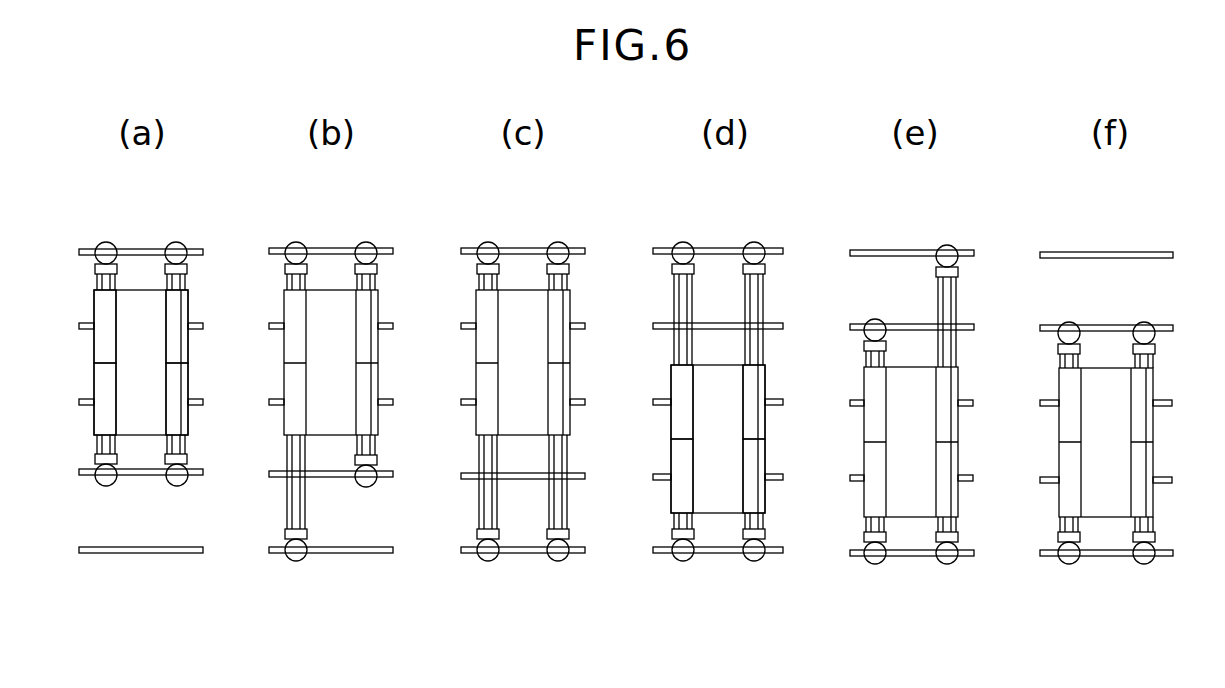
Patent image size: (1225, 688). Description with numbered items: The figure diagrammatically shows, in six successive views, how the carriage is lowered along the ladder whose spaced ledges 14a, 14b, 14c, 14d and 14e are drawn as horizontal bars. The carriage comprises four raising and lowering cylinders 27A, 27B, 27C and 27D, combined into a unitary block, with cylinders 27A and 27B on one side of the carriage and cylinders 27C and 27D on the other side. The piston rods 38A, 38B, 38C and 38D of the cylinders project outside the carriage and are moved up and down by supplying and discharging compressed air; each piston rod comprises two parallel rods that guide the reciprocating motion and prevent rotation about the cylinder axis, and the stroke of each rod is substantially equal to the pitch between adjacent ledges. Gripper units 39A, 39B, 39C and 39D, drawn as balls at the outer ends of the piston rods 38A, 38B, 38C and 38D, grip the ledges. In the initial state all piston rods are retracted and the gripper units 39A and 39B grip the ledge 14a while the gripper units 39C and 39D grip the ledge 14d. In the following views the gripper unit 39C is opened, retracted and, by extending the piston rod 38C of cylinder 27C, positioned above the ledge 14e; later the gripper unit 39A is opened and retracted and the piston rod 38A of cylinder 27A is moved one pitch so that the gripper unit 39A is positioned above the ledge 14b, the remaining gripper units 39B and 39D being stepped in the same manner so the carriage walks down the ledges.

In FIG. 6a, the ledge 14a is at (83, 249).
In FIG. 6f, the ledge 14a is at (1155, 252).
In FIG. 6a, the ledge 14b is at (87, 330).
In FIG. 6f, the ledge 14b is at (1163, 326).
In FIG. 6a, the ledge 14c is at (88, 398).
In FIG. 6f, the ledge 14c is at (1165, 406).
In FIG. 6a, the ledge 14d is at (87, 478).
In FIG. 6f, the ledge 14d is at (1162, 476).
In FIG. 6a, the ledge 14e is at (105, 554).
In FIG. 6f, the ledge 14e is at (1165, 555).
In FIG. 6a, the raising and lowering cylinder 27A is at (97, 305).
In FIG. 6d, the raising and lowering cylinder 27A is at (673, 378).
In FIG. 6a, the raising and lowering cylinder 27B is at (184, 301).
In FIG. 6d, the raising and lowering cylinder 27B is at (764, 378).
In FIG. 6a, the raising and lowering cylinder 27C is at (97, 418).
In FIG. 6d, the raising and lowering cylinder 27C is at (673, 460).
In FIG. 6a, the raising and lowering cylinder 27D is at (182, 388).
In FIG. 6d, the raising and lowering cylinder 27D is at (752, 460).
In FIG. 6a, the piston rod 38A is at (96, 281).
In FIG. 6b, the piston rod 38A is at (286, 266).
In FIG. 6c, the piston rod 38A is at (479, 266).
In FIG. 6d, the piston rod 38A is at (673, 268).
In FIG. 6e, the piston rod 38A is at (884, 353).
In FIG. 6f, the piston rod 38A is at (1058, 356).
In FIG. 6a, the piston rod 38B is at (168, 277).
In FIG. 6b, the piston rod 38B is at (376, 268).
In FIG. 6c, the piston rod 38B is at (569, 268).
In FIG. 6d, the piston rod 38B is at (764, 270).
In FIG. 6e, the piston rod 38B is at (939, 295).
In FIG. 6f, the piston rod 38B is at (1155, 355).
In FIG. 6a, the piston rod 38C is at (96, 450).
In FIG. 6b, the piston rod 38C is at (290, 520).
In FIG. 6c, the piston rod 38C is at (496, 455).
In FIG. 6d, the piston rod 38C is at (675, 523).
In FIG. 6e, the piston rod 38C is at (866, 527).
In FIG. 6f, the piston rod 38C is at (1060, 528).
In FIG. 6a, the piston rod 38D is at (168, 447).
In FIG. 6b, the piston rod 38D is at (358, 447).
In FIG. 6c, the piston rod 38D is at (549, 508).
In FIG. 6d, the piston rod 38D is at (745, 523).
In FIG. 6e, the piston rod 38D is at (956, 527).
In FIG. 6f, the piston rod 38D is at (1156, 528).
In FIG. 6a, the gripper unit 39A is at (106, 242).
In FIG. 6b, the gripper unit 39A is at (298, 243).
In FIG. 6c, the gripper unit 39A is at (490, 243).
In FIG. 6d, the gripper unit 39A is at (688, 243).
In FIG. 6e, the gripper unit 39A is at (874, 320).
In FIG. 6f, the gripper unit 39A is at (1069, 322).
In FIG. 6a, the gripper unit 39B is at (176, 242).
In FIG. 6b, the gripper unit 39B is at (362, 243).
In FIG. 6c, the gripper unit 39B is at (555, 243).
In FIG. 6d, the gripper unit 39B is at (750, 243).
In FIG. 6e, the gripper unit 39B is at (947, 245).
In FIG. 6f, the gripper unit 39B is at (1144, 322).
In FIG. 6a, the gripper unit 39C is at (106, 487).
In FIG. 6b, the gripper unit 39C is at (300, 556).
In FIG. 6c, the gripper unit 39C is at (488, 562).
In FIG. 6d, the gripper unit 39C is at (683, 562).
In FIG. 6e, the gripper unit 39C is at (880, 563).
In FIG. 6f, the gripper unit 39C is at (1072, 565).
In FIG. 6a, the gripper unit 39D is at (177, 487).
In FIG. 6b, the gripper unit 39D is at (366, 487).
In FIG. 6c, the gripper unit 39D is at (558, 562).
In FIG. 6d, the gripper unit 39D is at (754, 562).
In FIG. 6e, the gripper unit 39D is at (946, 563).
In FIG. 6f, the gripper unit 39D is at (1143, 565).